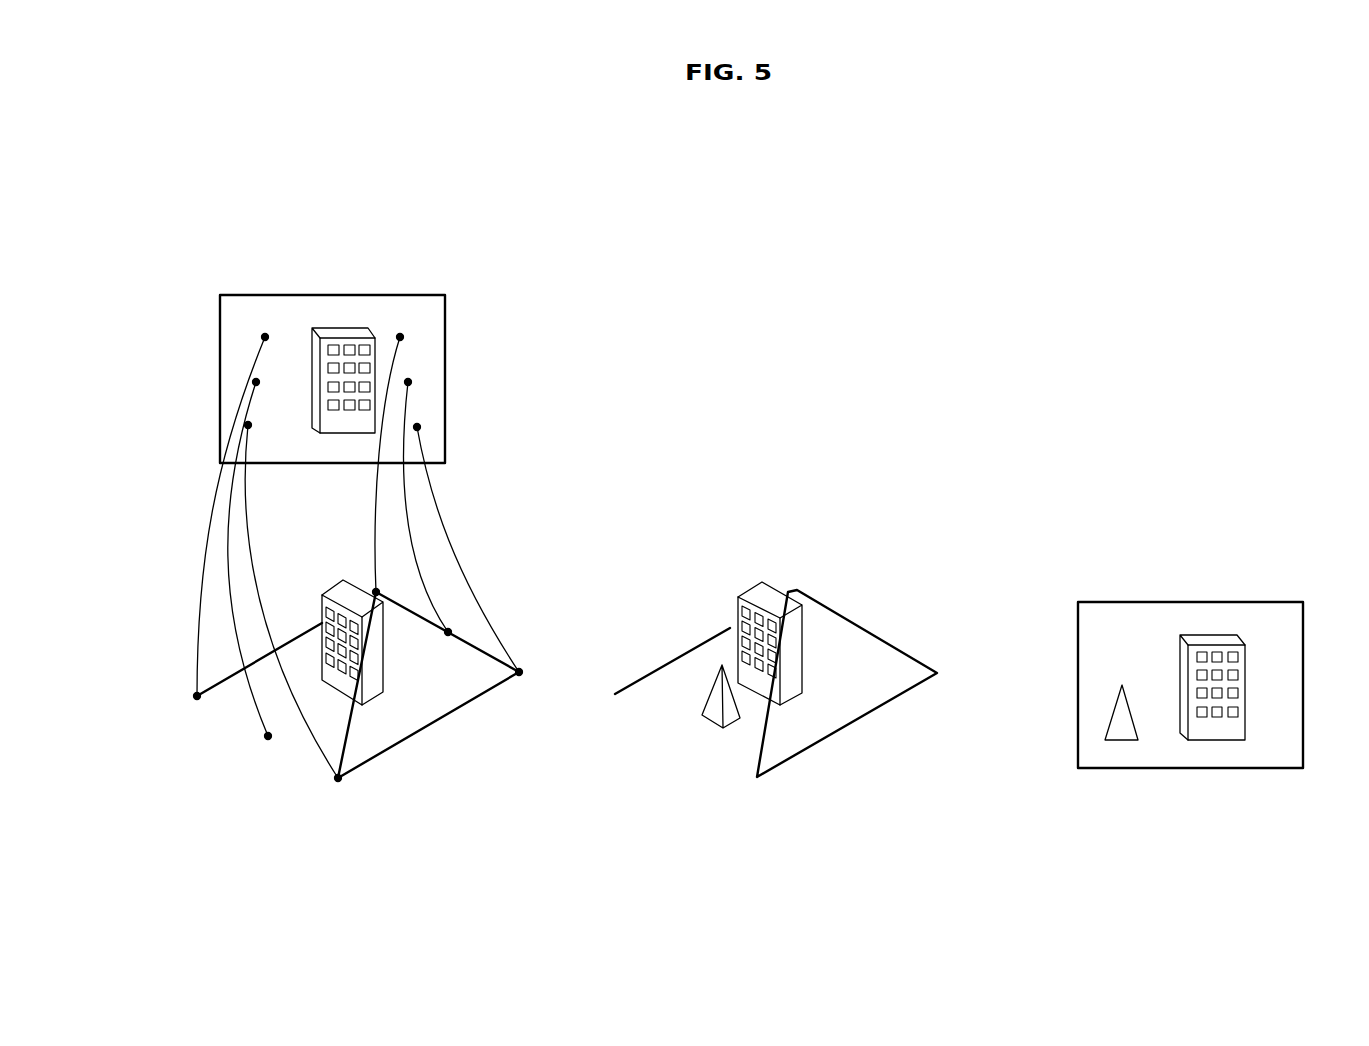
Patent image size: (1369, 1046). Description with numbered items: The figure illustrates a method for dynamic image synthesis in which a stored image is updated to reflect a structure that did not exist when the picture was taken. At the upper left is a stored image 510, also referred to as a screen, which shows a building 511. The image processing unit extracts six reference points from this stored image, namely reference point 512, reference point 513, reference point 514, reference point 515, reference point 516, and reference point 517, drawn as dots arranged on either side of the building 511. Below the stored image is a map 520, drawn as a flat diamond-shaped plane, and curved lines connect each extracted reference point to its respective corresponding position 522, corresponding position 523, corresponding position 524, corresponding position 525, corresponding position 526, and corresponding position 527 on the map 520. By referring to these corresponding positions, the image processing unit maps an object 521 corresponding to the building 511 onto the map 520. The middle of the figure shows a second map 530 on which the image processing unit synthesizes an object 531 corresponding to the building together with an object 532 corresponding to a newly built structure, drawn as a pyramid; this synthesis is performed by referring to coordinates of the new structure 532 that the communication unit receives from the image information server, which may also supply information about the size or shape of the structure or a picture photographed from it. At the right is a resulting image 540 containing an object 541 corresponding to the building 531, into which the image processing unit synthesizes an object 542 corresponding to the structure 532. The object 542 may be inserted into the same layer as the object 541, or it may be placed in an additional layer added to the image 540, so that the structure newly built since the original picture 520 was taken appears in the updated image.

The stored image 510 is at (402, 295).
The building 511 is at (335, 328).
The reference point 512 is at (265, 337).
The reference point 513 is at (256, 382).
The reference point 514 is at (248, 425).
The reference point 515 is at (400, 337).
The reference point 516 is at (408, 382).
The reference point 517 is at (417, 427).
The map 520 is at (433, 728).
The object 521 is at (330, 583).
The corresponding position 522 is at (197, 696).
The corresponding position 523 is at (268, 736).
The corresponding position 524 is at (338, 778).
The corresponding position 525 is at (376, 592).
The corresponding position 526 is at (448, 632).
The corresponding position 527 is at (519, 672).
The map 530 is at (850, 723).
The object corresponding to a building 531 is at (745, 582).
The object corresponding to the newly built structure 532 is at (713, 703).
The image 540 is at (1187, 602).
The object corresponding to the building 541 is at (1248, 690).
The object corresponding to the structure 542 is at (1113, 712).